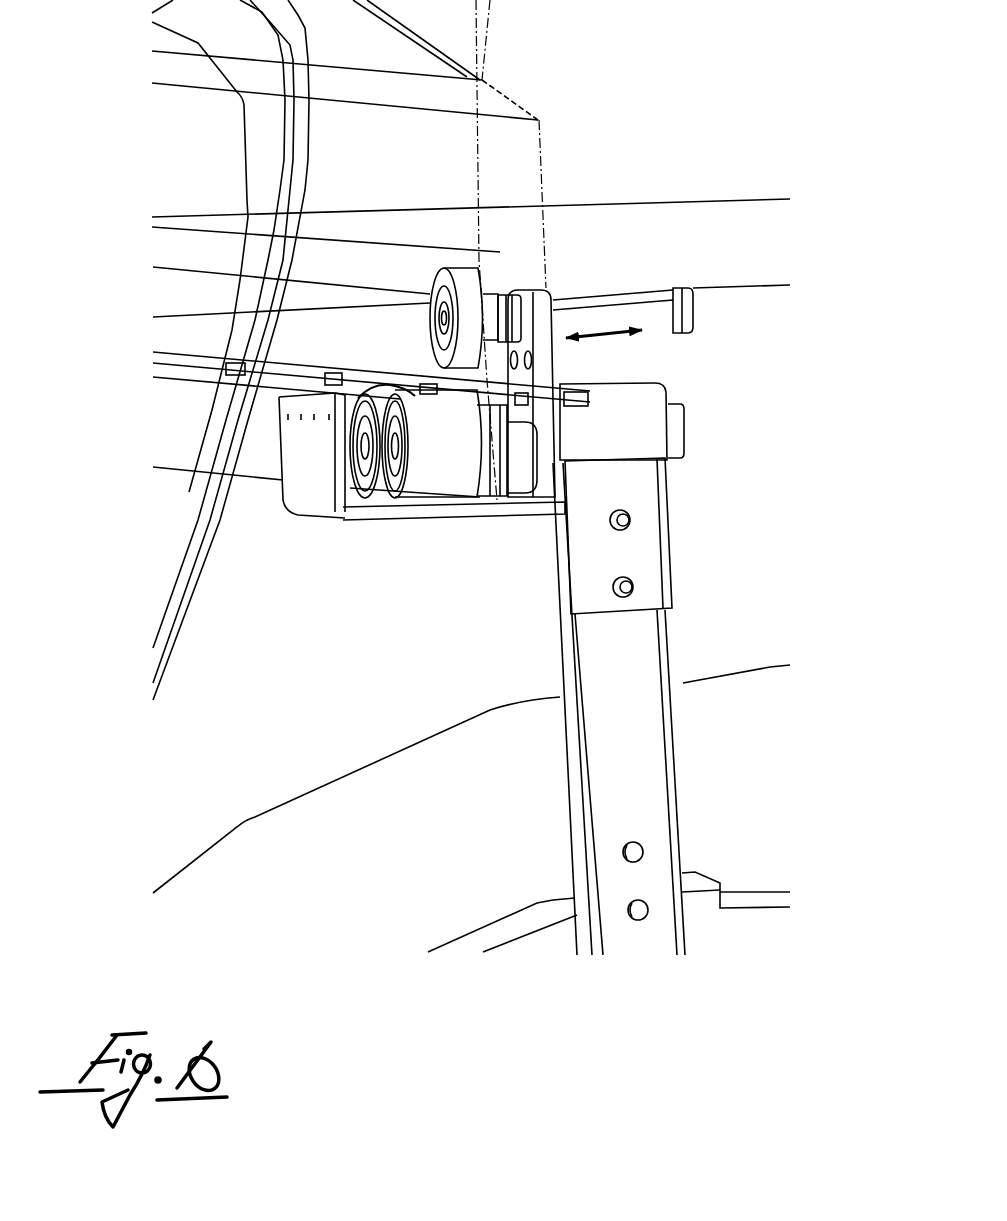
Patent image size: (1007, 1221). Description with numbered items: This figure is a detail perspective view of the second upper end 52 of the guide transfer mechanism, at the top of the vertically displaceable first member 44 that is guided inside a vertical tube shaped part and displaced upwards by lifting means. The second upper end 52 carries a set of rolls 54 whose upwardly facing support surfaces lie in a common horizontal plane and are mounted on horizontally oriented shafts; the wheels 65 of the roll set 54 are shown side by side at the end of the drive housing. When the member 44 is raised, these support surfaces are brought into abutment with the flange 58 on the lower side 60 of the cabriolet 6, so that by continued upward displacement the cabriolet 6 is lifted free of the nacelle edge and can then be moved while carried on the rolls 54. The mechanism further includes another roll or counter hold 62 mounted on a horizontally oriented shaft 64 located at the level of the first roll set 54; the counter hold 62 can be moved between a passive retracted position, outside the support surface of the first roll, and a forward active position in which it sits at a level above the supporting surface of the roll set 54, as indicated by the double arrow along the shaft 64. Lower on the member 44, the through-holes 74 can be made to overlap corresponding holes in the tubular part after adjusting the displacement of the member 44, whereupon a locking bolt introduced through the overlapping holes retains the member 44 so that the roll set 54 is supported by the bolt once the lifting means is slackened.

The cabriolet 6 is at (465, 143).
The vertically displaceable first member 44 is at (630, 712).
The second upper end 52 is at (695, 489).
The rolls 54 is at (422, 455).
The flange 58 is at (575, 404).
The lower side 60 is at (563, 411).
The counter hold 62 is at (518, 268).
The horizontally oriented shaft 64 is at (600, 316).
The drive wheels 65 is at (413, 398).
The through-holes 74 is at (640, 849).